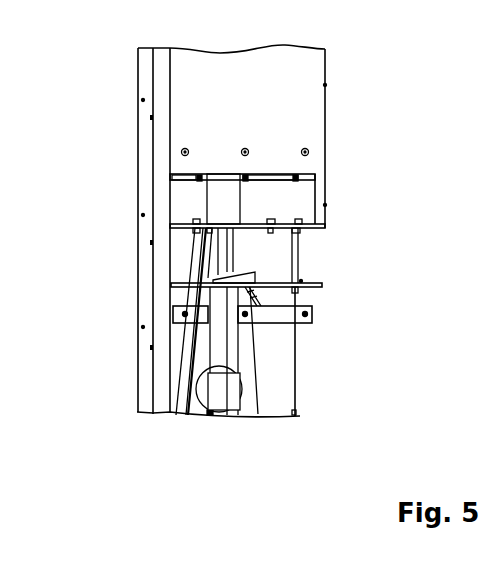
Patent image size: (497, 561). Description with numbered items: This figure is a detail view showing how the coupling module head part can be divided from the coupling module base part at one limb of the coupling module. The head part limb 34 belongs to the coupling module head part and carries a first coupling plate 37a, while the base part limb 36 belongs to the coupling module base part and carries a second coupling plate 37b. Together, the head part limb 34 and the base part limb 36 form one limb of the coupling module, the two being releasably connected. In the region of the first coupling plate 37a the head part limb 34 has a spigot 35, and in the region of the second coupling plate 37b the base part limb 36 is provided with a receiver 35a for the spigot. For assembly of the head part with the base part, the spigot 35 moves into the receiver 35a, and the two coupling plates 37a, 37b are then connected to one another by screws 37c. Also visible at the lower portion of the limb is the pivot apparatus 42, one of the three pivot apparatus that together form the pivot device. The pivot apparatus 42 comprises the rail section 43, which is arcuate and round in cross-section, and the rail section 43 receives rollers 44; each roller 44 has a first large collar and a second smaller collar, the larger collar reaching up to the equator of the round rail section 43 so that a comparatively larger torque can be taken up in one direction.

The head part limb 34 is at (344, 106).
The spigot 35 is at (220, 247).
The receiver for the spigot 35a is at (215, 347).
The base part limb 36 is at (305, 346).
The first coupling plate 37a is at (255, 232).
The second coupling plate 37b is at (305, 287).
The screws 37c is at (196, 221).
The pivot apparatus 42 is at (269, 377).
The rail section 43 is at (253, 396).
The roller 44 is at (212, 392).